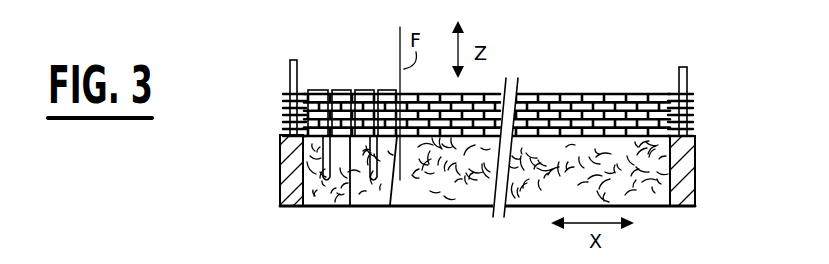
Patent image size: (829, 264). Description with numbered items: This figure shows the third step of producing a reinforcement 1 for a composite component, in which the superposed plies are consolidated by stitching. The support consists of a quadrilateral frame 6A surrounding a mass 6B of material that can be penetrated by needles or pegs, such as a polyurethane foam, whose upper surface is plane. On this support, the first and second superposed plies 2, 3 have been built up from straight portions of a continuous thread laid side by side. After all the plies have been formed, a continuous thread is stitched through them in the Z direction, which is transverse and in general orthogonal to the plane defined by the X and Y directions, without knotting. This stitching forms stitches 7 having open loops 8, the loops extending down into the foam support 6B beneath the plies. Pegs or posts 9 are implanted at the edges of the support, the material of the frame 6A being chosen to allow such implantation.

The reinforcement 1 is at (244, 131).
The first ply 2 is at (690, 117).
The second ply 3 is at (565, 97).
The quadrilateral frame 6A is at (270, 173).
The mass of material capable of being penetrated by needles 6B is at (633, 185).
The stitches 7 is at (367, 90).
The open loops 8 is at (350, 205).
The end posts / guides 9 is at (290, 74).